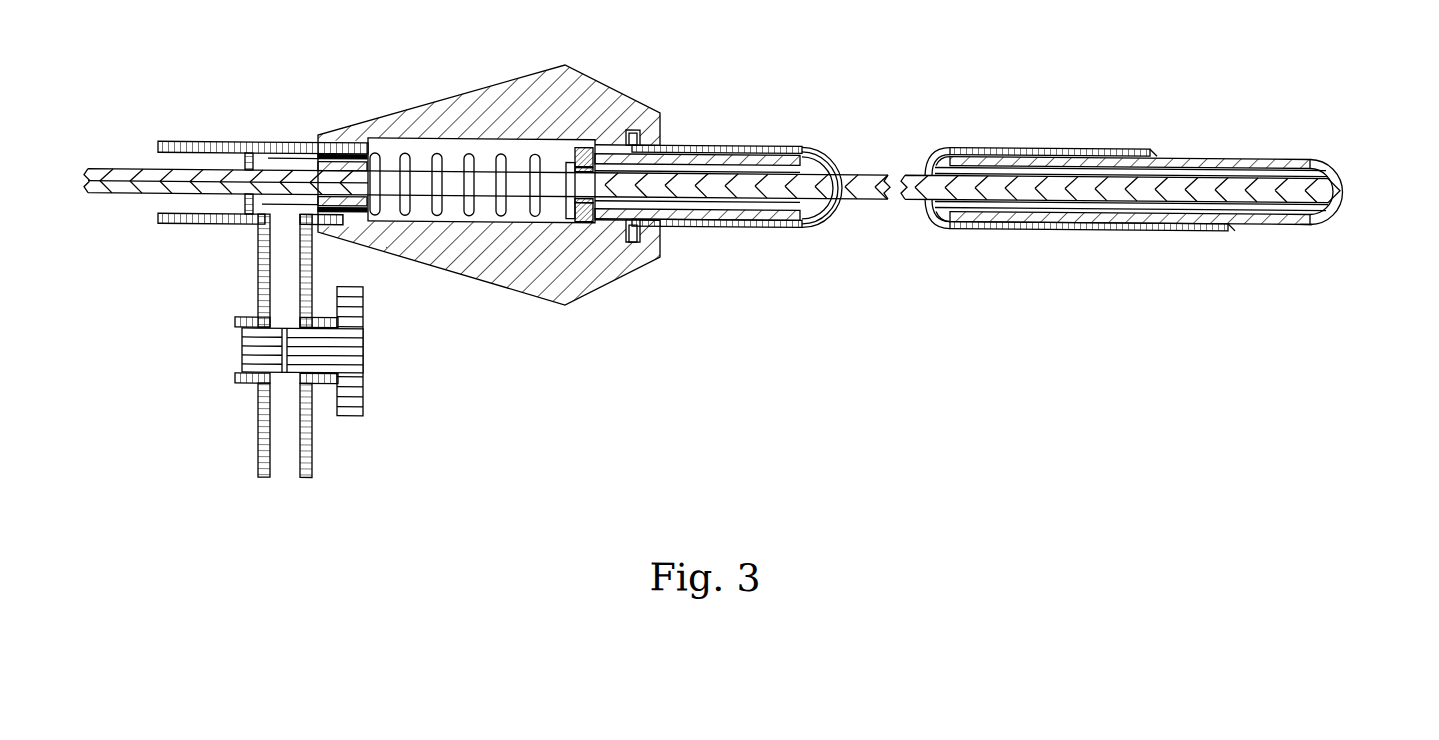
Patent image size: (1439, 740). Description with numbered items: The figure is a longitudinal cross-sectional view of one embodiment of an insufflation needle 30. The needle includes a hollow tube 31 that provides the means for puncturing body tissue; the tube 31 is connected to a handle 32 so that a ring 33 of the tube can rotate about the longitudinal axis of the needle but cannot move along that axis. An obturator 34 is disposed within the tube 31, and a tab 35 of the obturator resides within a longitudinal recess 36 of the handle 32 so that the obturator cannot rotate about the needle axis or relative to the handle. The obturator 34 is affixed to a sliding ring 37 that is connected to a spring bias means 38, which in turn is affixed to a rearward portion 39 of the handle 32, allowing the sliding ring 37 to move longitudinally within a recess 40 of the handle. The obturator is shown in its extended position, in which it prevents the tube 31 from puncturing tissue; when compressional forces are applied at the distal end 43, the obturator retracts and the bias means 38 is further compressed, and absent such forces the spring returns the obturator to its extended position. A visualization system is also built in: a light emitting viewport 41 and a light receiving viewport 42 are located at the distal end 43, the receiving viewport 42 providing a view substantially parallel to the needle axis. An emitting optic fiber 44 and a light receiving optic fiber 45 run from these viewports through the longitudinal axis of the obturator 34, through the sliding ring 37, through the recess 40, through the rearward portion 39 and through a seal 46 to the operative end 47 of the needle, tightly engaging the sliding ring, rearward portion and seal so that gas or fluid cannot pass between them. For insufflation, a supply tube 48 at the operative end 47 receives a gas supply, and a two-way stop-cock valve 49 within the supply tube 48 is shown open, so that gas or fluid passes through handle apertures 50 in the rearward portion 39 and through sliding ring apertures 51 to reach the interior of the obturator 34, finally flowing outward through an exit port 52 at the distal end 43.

The insufflation needle 30 is at (810, 106).
The hollow tube 31 is at (978, 144).
The handle 32 is at (573, 87).
The ring 33 is at (662, 117).
The obturator 34 is at (975, 207).
The tab 35 is at (603, 140).
The longitudinal recess 36 is at (480, 141).
The sliding ring 37 is at (592, 229).
The spring bias means 38 is at (540, 220).
The rearward portion 39 is at (370, 119).
The recess 40 is at (485, 211).
The light emitting viewport 41 is at (1342, 171).
The light receiving viewport 42 is at (1342, 189).
The distal end 43 is at (1323, 219).
The emitting optic fiber 44 is at (1242, 175).
The light receiving optic fiber 45 is at (1265, 185).
The seal 46 is at (245, 157).
The operative end 47 is at (107, 194).
The supply tube 48 is at (278, 475).
The two-way stop-cock valve 49 is at (263, 343).
The handle apertures 50 is at (270, 158).
The sliding ring apertures 51 is at (588, 225).
The exit port 52 is at (1353, 181).